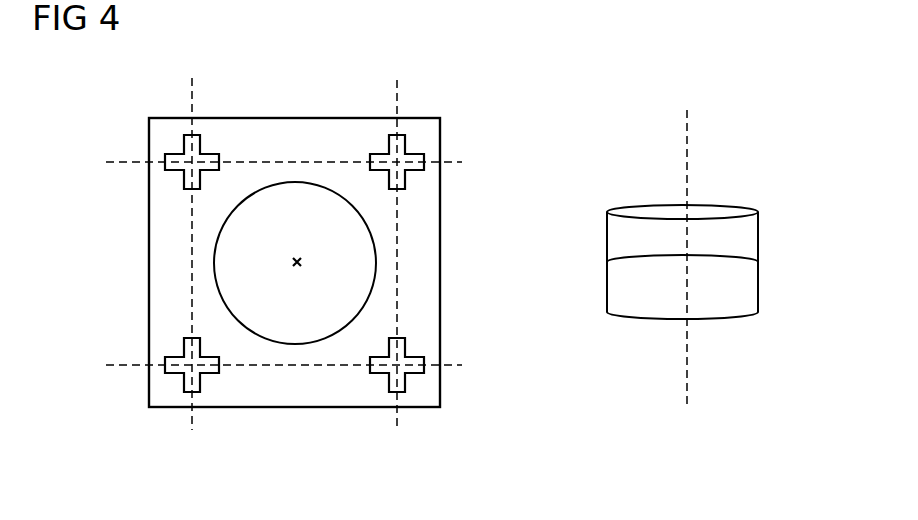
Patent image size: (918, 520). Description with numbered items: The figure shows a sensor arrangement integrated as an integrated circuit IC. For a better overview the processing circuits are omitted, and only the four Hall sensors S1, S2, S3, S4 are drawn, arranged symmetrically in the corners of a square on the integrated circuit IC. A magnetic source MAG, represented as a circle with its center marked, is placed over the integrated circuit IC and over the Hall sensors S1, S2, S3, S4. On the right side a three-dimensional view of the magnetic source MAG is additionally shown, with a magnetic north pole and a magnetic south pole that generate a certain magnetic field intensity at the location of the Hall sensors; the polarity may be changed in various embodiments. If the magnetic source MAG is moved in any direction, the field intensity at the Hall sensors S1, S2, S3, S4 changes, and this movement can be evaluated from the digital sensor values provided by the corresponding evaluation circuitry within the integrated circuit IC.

The integrated circuit IC is at (440, 332).
The Hall sensor S1 is at (182, 173).
The Hall sensor S2 is at (402, 375).
The Hall sensor S3 is at (405, 173).
The Hall sensor S4 is at (200, 378).
The magnetic source MAG is at (607, 288).